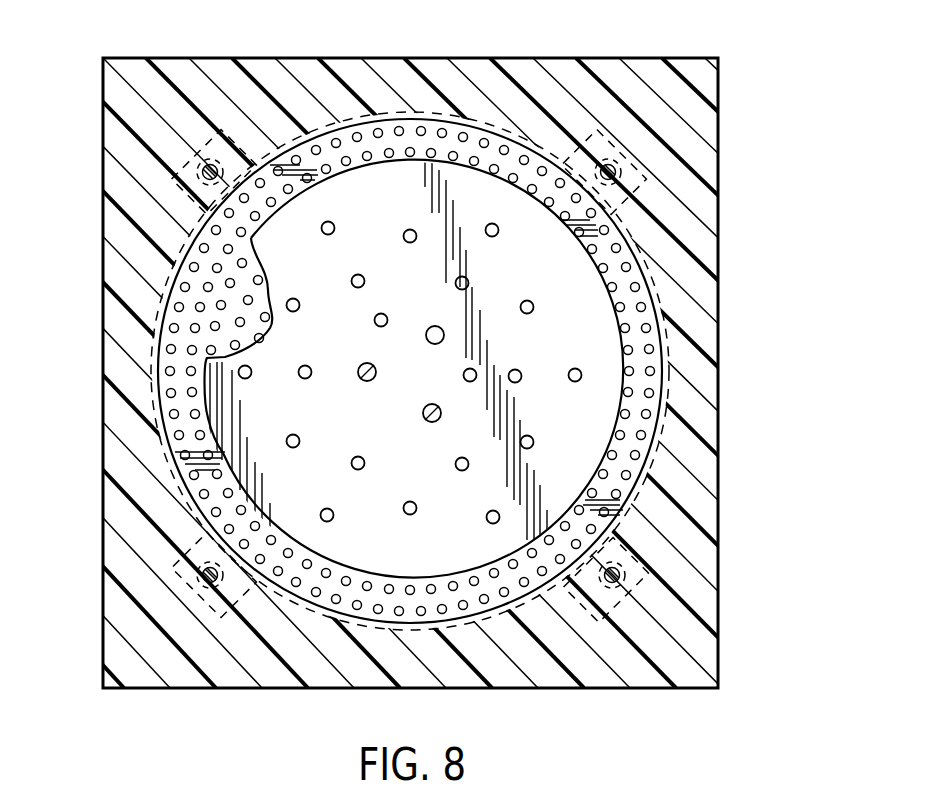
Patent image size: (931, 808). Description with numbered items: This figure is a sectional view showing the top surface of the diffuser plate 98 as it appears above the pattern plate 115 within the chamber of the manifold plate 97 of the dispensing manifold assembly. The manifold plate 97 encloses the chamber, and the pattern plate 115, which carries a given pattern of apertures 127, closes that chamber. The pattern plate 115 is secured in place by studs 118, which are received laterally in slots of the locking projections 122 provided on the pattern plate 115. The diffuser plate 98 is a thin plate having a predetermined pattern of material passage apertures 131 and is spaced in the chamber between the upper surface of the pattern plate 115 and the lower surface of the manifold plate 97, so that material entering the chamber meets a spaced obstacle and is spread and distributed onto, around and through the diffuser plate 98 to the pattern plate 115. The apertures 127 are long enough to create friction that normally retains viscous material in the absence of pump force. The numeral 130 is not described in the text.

The manifold plate 97 is at (690, 415).
The diffuser plate 98 is at (578, 345).
The pattern plate 115 is at (473, 148).
The apertures 127 is at (320, 124).
The studs 118 is at (601, 165).
The locking projections 122 is at (205, 137).
The small holes 130 is at (360, 274).
The material passage apertures 131 is at (366, 381).